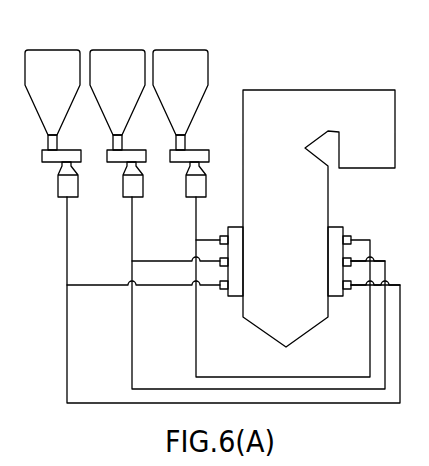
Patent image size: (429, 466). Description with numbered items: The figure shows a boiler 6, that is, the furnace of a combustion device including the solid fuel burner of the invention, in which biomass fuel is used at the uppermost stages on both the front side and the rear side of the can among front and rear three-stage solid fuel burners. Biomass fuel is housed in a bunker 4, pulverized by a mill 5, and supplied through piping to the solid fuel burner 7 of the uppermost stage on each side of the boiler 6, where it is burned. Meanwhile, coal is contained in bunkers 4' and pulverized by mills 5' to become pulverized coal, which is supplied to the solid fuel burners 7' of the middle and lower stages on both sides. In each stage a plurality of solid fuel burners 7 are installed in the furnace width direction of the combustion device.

The bunker 4' is at (85, 90).
The bunker 4 is at (192, 106).
The mill 5' is at (85, 182).
The mill 5 is at (208, 180).
The boiler 6 is at (313, 89).
The solid fuel burner 7 is at (295, 223).
The solid fuel burner 7' is at (283, 295).